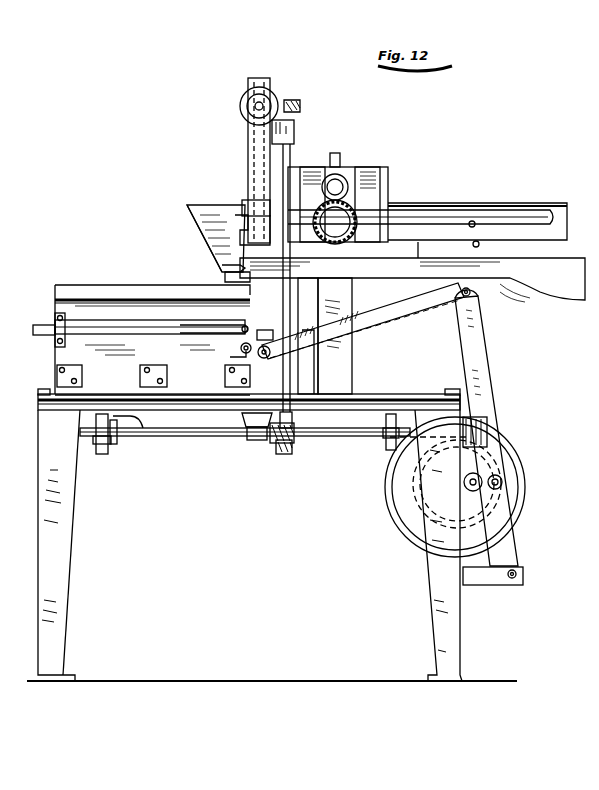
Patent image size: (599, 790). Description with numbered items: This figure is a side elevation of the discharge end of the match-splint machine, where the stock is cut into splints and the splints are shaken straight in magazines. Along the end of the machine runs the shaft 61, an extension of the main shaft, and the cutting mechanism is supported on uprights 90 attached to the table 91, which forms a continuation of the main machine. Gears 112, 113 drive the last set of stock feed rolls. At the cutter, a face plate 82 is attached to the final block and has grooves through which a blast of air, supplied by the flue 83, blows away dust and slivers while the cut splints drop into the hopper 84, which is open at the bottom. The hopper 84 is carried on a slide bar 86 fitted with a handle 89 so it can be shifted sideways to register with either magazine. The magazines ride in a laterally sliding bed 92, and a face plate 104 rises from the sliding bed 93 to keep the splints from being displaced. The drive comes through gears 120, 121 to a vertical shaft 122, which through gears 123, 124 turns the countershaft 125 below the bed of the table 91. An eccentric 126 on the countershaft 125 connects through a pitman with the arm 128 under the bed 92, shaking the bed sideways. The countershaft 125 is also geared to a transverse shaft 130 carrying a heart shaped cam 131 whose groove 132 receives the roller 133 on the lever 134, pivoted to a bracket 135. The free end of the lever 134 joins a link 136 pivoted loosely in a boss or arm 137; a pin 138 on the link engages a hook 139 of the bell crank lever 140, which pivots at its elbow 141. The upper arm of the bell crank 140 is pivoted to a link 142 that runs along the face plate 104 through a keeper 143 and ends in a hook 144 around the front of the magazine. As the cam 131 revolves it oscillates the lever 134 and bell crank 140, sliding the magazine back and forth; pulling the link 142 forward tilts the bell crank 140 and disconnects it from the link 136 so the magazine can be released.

The shaft 61 is at (475, 222).
The face plate 82 is at (224, 205).
The flue 83 is at (500, 280).
The hopper 84 is at (200, 240).
The slide bar 86 is at (226, 278).
The handle 89 is at (222, 268).
The upright 90 is at (352, 354).
The table 91 is at (192, 410).
The laterally sliding bed 92 is at (45, 405).
The sliding bed 93 is at (42, 390).
The face plate 104 is at (100, 298).
The gear 112 is at (310, 188).
The gear 113 is at (345, 185).
The gear 120 is at (265, 98).
The gear 121 is at (298, 108).
The vertical shaft 122 is at (292, 150).
The gear 123 is at (296, 440).
The gear 124 is at (284, 456).
The countershaft 125 is at (215, 437).
The eccentric 126 is at (104, 455).
The arm 128 is at (140, 428).
The transverse shaft 130 is at (480, 478).
The heart shaped cam 131 is at (490, 432).
The groove 132 is at (402, 512).
The roller 133 is at (502, 482).
The lever 134 is at (480, 375).
The bracket 135 is at (485, 585).
The link 136 is at (407, 312).
The boss or arm 137 is at (304, 372).
The pin 138 is at (264, 358).
The hook 139 is at (262, 346).
The bell crank lever 140 is at (240, 335).
The elbow 141 is at (242, 352).
The link 142 is at (118, 330).
The keeper 143 is at (58, 316).
The hook 144 is at (34, 328).